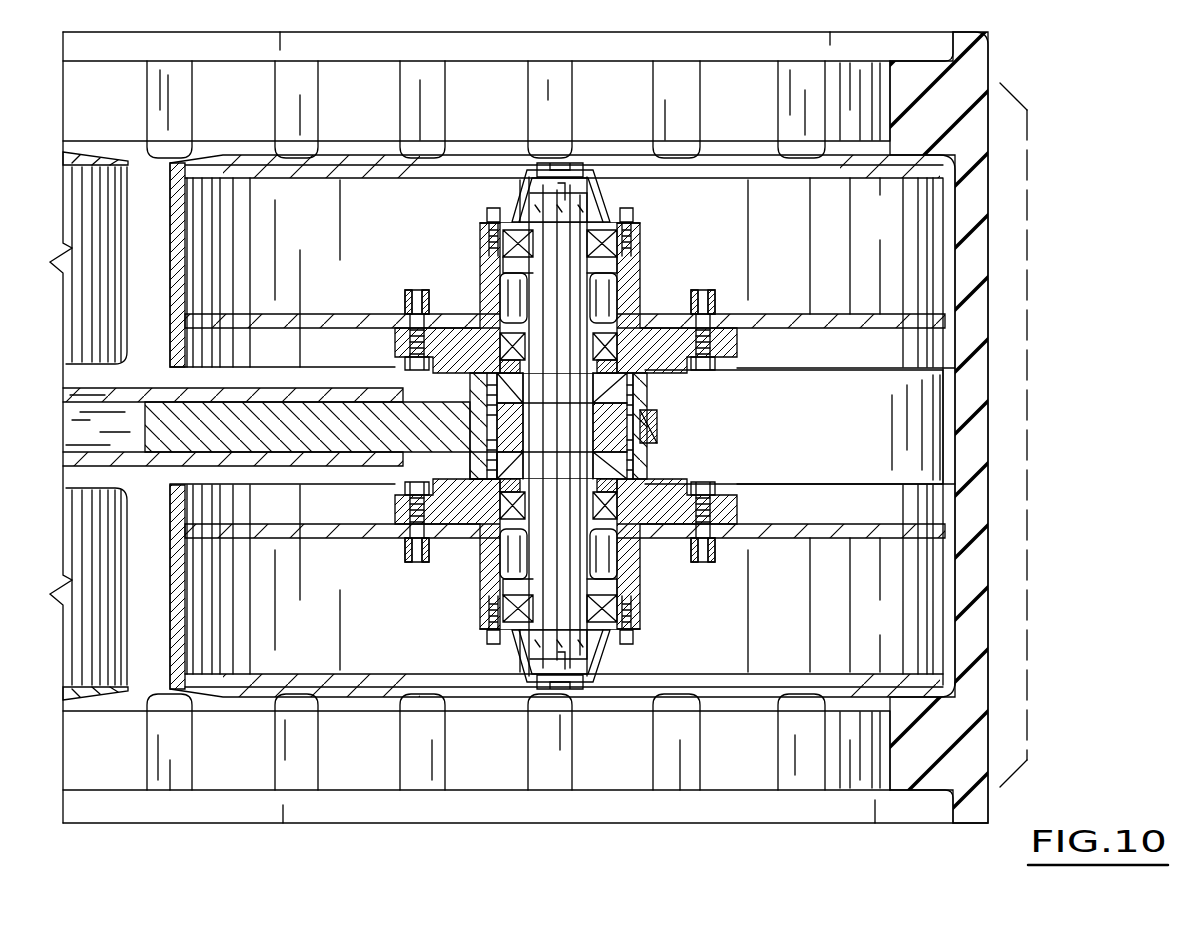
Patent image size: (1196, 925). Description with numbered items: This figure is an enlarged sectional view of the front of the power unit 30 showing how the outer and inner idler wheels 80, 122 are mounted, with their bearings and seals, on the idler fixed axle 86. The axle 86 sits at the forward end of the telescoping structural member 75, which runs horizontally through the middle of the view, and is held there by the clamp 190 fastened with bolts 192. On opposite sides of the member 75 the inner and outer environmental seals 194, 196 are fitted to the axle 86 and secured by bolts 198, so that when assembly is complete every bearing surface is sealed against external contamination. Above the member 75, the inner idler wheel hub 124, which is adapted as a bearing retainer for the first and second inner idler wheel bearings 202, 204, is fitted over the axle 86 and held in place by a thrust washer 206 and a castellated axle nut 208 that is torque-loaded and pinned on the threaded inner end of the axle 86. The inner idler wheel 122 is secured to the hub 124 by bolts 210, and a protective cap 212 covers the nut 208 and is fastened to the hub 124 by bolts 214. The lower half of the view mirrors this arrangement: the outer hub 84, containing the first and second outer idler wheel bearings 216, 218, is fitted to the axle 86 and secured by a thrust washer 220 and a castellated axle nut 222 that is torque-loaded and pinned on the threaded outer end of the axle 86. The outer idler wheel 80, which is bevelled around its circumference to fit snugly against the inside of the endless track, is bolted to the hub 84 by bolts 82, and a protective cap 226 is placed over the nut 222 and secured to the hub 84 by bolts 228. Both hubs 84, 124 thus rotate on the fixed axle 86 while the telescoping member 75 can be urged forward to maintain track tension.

The power unit 30 is at (490, 829).
The telescoping structural member 75 is at (320, 445).
The outer idler wheel 80 is at (897, 631).
The bolts 82 is at (722, 540).
The outer hub 84 is at (470, 479).
The idler fixed axle 86 is at (648, 457).
The inner idler wheel 122 is at (898, 230).
The inner idler wheel hub 124 is at (478, 300).
The clamp 190 is at (635, 410).
The bolts 192 is at (657, 432).
The inner environmental seal 194 is at (655, 330).
The outer environmental seal 196 is at (648, 530).
The bolts 198 is at (468, 398).
The first inner idler wheel bearing 202 is at (620, 290).
The second inner idler wheel bearing 204 is at (625, 240).
The thrust washer 206 is at (525, 215).
The castellated axle nut 208 is at (540, 168).
The bolts 210 is at (740, 320).
The protective cap 212 is at (583, 166).
The bolts 214 is at (640, 262).
The first outer idler wheel bearing 216 is at (492, 552).
The second outer idler wheel bearing 218 is at (500, 605).
The thrust washer 220 is at (592, 690).
The castellated axle nut 222 is at (540, 684).
The protective cap 226 is at (610, 650).
The bolts 228 is at (492, 640).